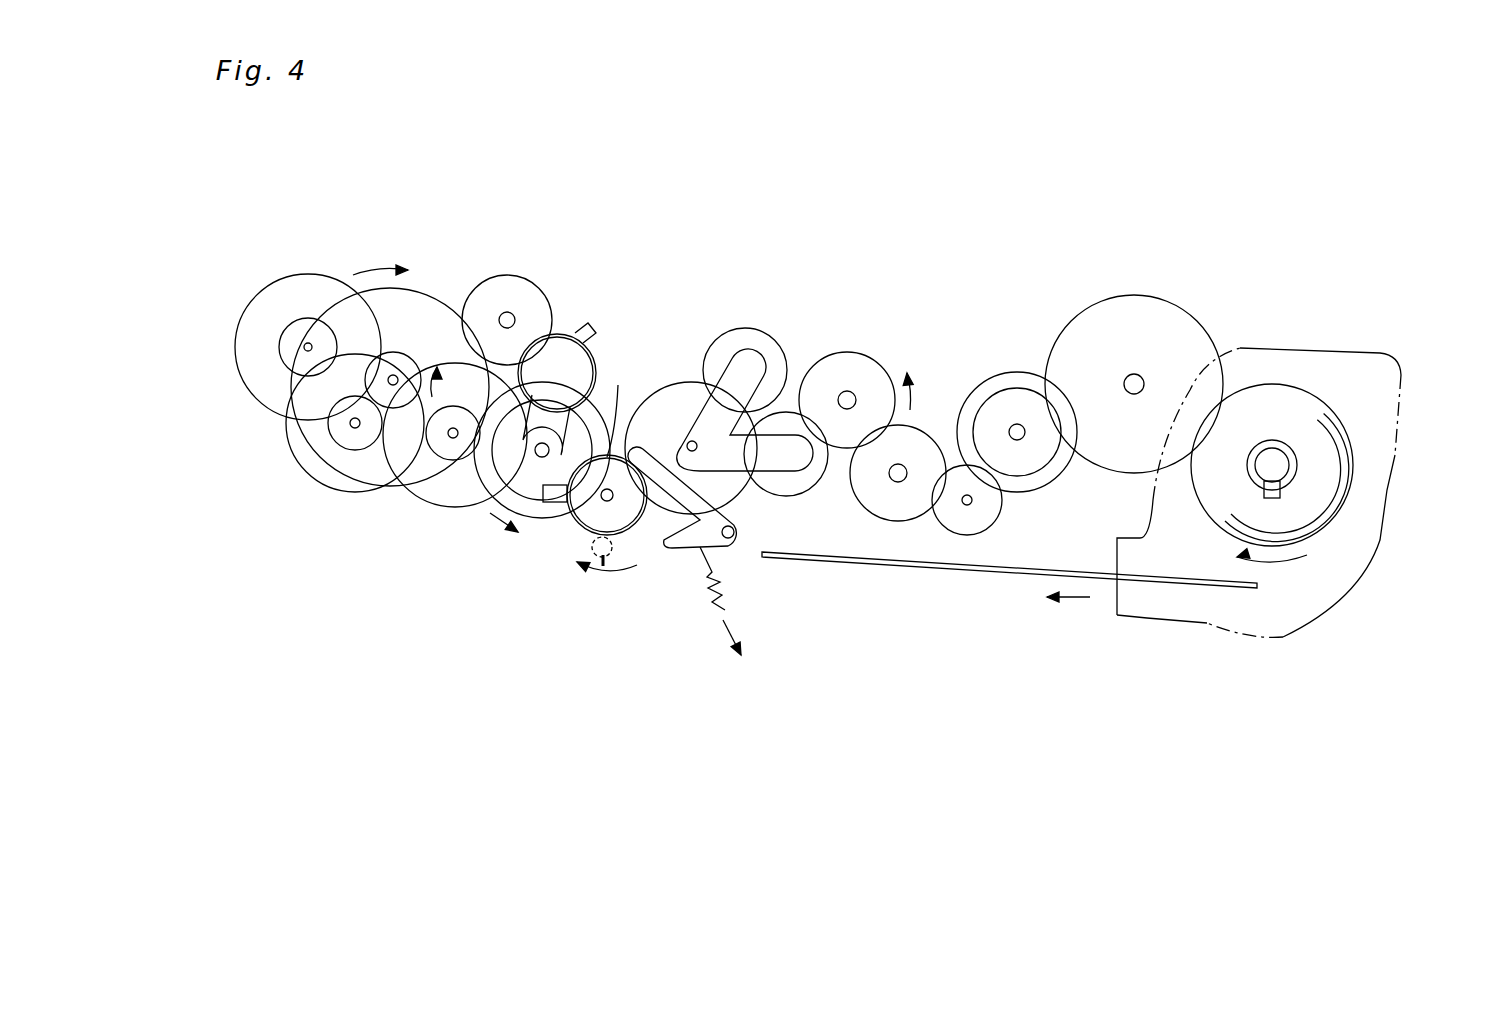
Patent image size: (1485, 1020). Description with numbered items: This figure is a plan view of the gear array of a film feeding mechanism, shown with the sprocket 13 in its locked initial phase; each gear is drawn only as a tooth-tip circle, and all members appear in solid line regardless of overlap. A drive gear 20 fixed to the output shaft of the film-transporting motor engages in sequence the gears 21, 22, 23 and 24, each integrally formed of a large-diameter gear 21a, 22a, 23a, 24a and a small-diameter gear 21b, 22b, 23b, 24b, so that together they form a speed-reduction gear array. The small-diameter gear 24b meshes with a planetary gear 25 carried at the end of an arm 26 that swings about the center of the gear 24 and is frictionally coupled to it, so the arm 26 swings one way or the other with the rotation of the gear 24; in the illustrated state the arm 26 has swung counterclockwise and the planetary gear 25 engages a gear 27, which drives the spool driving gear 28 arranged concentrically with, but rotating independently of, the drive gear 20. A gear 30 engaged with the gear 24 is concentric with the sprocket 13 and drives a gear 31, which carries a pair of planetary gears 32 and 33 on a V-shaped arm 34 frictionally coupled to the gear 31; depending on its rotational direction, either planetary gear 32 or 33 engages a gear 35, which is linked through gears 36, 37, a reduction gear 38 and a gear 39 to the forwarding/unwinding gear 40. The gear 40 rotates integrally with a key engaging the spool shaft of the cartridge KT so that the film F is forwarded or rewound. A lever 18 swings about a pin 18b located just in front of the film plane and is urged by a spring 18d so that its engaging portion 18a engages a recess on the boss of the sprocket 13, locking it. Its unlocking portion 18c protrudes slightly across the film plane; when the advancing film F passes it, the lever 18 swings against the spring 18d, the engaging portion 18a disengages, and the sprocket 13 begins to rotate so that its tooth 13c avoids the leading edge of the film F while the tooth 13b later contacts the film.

The sprocket 13 is at (586, 578).
The tooth 13b is at (567, 483).
The tooth 13c is at (608, 550).
The lever 18 is at (710, 601).
The engaging portion 18a is at (583, 533).
The pin 18b is at (787, 557).
The unlocking portion 18c is at (687, 555).
The spring 18d is at (723, 620).
The drive gear 20 is at (397, 357).
The gear 21 is at (277, 297).
The large-diameter gear 21a is at (303, 297).
The small-diameter gear 21b is at (292, 343).
The gear 22 is at (288, 438).
The large-diameter gear 22a is at (322, 465).
The small-diameter gear 22b is at (338, 427).
The gear 23 is at (429, 491).
The large-diameter gear 23a is at (446, 487).
The small-diameter gear 23b is at (423, 452).
The gear 24 is at (512, 563).
The large-diameter gear 24a is at (527, 517).
The small-diameter gear 24b is at (540, 493).
The planetary gear 25 is at (597, 363).
The arm 26 is at (589, 326).
The gear 27 is at (523, 293).
The spool driving gear 28 is at (437, 310).
The gear 30 is at (648, 520).
The gear 31 is at (677, 383).
The planetary gear 32 is at (807, 497).
The planetary gear 33 is at (764, 342).
The V-shaped arm 34 is at (708, 390).
The gear 35 is at (870, 355).
The gear 36 is at (910, 522).
The gear 37 is at (977, 537).
The reduction gear 38 is at (1005, 368).
The gear 39 is at (1147, 298).
The forwarding/unwinding gear 40 is at (1335, 415).
The cartridge KT is at (1387, 492).
The film F is at (1137, 580).